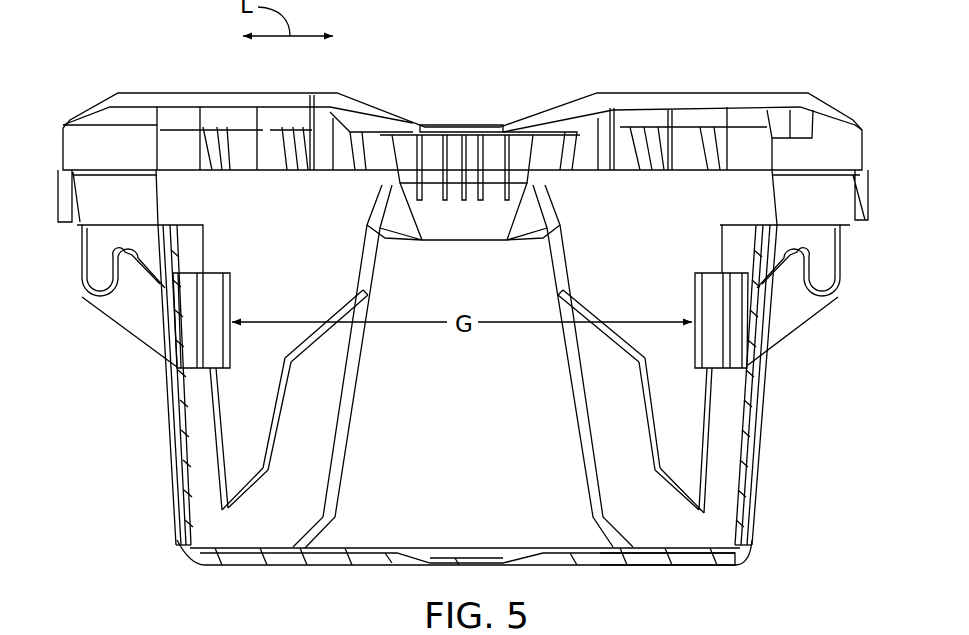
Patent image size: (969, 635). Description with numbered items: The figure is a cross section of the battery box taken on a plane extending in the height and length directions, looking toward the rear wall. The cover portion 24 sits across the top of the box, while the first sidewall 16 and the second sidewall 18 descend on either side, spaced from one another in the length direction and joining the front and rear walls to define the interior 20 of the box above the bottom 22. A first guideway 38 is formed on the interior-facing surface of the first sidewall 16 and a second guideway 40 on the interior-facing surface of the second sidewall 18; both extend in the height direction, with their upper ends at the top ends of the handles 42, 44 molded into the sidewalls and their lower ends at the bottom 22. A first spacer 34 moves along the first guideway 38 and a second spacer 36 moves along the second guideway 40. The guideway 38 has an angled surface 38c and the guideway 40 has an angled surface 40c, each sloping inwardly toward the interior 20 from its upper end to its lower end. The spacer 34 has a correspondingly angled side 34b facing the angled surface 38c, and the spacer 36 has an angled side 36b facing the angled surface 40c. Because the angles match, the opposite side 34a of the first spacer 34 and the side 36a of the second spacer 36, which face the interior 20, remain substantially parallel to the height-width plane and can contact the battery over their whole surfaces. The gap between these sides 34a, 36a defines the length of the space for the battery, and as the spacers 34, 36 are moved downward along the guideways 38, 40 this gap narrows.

The first sidewall 16 is at (167, 411).
The second sidewall 18 is at (755, 487).
The interior 20 is at (281, 528).
The bottom 22 is at (654, 560).
The cover portion 24 is at (744, 93).
The first spacer 34 is at (206, 378).
The side of the first spacer 34a is at (234, 298).
The side of the first spacer 34b is at (177, 337).
The second spacer 36 is at (704, 377).
The side of the second spacer 36a is at (693, 299).
The side of the second spacer 36b is at (753, 347).
The first guideway 38 is at (194, 497).
The angled surface 38c is at (178, 444).
The second guideway 40 is at (728, 498).
The angled surface 40c is at (742, 468).
The handle 42 is at (118, 267).
The handle 44 is at (808, 263).